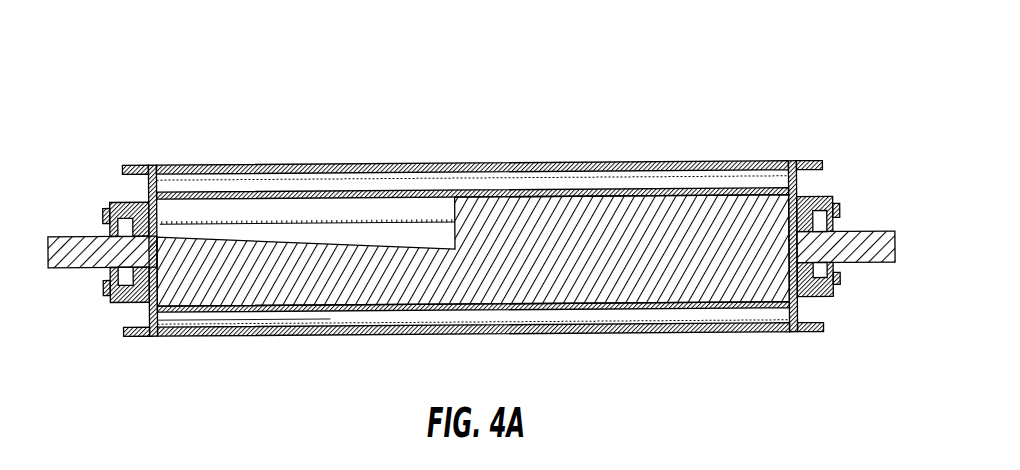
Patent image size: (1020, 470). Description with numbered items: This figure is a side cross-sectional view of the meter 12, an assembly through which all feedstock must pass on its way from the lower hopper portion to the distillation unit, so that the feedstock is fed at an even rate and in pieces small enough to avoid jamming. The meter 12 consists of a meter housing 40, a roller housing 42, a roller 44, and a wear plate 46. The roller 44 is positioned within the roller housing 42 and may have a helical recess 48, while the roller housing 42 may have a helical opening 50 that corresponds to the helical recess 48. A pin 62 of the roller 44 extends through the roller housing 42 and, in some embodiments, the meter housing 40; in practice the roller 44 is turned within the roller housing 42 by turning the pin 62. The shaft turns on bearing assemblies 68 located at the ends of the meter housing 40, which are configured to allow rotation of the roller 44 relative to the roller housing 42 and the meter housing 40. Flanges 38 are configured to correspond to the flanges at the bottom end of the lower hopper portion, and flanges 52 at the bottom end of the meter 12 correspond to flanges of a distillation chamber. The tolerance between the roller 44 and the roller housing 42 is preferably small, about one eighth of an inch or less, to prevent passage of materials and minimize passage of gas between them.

The meter 12 is at (826, 60).
The flanges 38 is at (140, 164).
The meter housing 40 is at (635, 164).
The roller housing 42 is at (308, 307).
The roller 44 is at (650, 280).
The wear plate 46 is at (502, 191).
The helical recess 48 is at (275, 221).
The helical opening 50 is at (522, 316).
The flanges 52 is at (138, 338).
The pin 62 is at (75, 269).
The bearing assemblies 68 is at (118, 191).